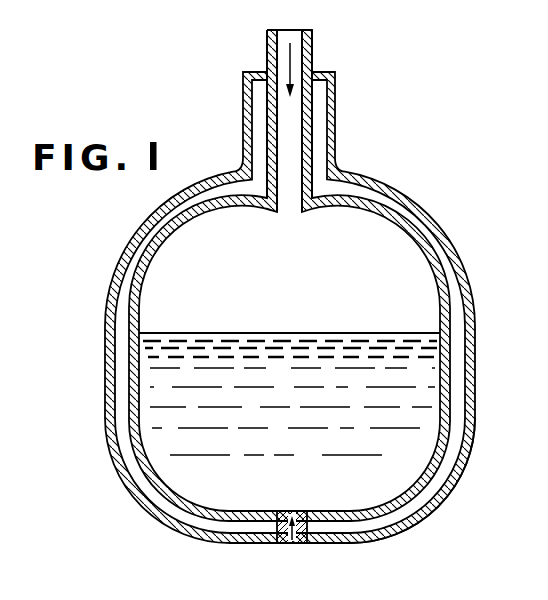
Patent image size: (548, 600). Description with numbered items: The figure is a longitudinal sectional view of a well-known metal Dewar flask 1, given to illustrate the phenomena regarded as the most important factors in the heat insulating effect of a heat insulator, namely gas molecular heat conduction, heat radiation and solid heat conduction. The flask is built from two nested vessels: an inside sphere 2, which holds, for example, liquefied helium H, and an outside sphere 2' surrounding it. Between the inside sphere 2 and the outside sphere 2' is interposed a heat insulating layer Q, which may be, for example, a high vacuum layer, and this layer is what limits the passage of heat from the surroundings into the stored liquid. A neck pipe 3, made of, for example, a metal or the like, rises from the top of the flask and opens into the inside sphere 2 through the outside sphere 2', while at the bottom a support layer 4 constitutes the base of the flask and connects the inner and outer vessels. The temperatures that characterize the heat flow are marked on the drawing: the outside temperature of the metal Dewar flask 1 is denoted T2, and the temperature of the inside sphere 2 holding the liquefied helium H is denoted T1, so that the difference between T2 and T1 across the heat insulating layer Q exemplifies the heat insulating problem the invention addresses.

The metal Dewar flask 1 is at (359, 169).
The inside sphere 2 is at (267, 275).
The outside sphere 2' is at (352, 500).
The neck pipe 3 is at (312, 39).
The support layer 4 is at (285, 544).
The liquefied helium H is at (210, 468).
The heat insulating layer Q is at (318, 118).
The temperature of inside sphere T1 is at (449, 410).
The outside temperature T2 is at (477, 382).